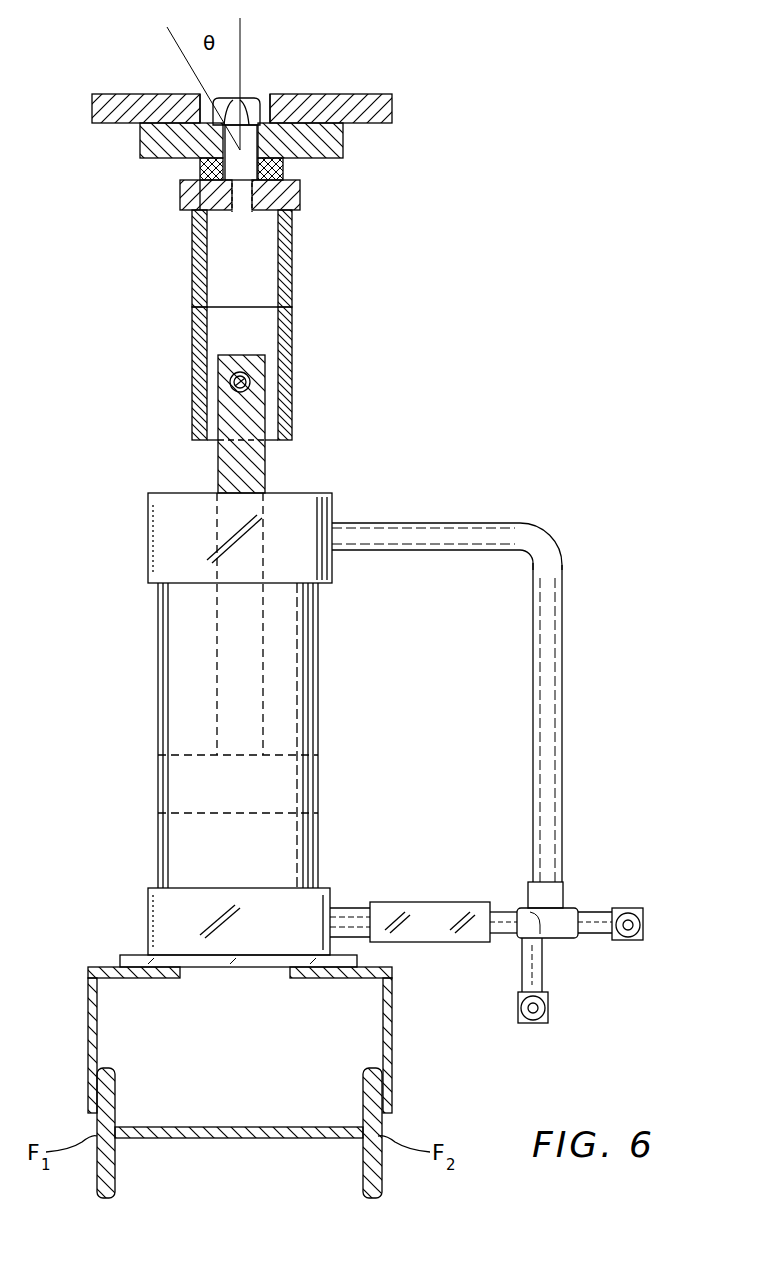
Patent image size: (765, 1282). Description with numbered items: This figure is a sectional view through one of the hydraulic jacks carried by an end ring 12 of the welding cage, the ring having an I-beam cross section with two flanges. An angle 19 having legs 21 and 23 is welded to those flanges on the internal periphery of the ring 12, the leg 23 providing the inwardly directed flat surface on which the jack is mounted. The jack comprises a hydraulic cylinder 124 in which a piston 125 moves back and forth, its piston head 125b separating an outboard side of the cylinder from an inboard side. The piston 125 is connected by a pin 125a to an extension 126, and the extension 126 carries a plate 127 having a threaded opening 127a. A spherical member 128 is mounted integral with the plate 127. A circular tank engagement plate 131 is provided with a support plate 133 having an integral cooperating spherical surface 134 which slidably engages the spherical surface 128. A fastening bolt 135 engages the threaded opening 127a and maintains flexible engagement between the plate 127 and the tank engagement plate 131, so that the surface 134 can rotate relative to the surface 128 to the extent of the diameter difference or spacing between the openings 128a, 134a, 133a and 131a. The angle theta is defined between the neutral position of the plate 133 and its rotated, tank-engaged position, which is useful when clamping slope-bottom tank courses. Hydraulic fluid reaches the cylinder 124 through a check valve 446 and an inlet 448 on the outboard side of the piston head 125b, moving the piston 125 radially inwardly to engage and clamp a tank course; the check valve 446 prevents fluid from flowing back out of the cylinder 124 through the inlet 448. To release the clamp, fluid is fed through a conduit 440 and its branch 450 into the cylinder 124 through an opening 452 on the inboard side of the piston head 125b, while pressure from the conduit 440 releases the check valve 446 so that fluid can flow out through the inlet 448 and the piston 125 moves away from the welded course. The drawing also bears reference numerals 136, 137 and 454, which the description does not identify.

The ring 12 is at (216, 1146).
The angle 19 is at (388, 1003).
The leg 21 is at (92, 1020).
The leg 23 is at (107, 957).
The hydraulic cylinder 124 is at (318, 708).
The piston 125 is at (217, 661).
The pin 125a is at (228, 360).
The piston head 125b is at (185, 758).
The extension 126 is at (193, 317).
The plate 127 is at (300, 195).
The threaded opening 127a is at (282, 203).
The spherical member 128 is at (300, 184).
The opening 128a is at (204, 180).
The circular tank engagement plate 131 is at (107, 103).
The opening 131a is at (205, 100).
The support plate 133 is at (153, 148).
The opening 133a is at (290, 140).
The spherical surface 134 is at (280, 164).
The opening 134a is at (208, 164).
The fastening bolt 135 is at (242, 137).
The bolt head 136 is at (257, 106).
The bolt lower end 137 is at (240, 213).
The conduit 440 is at (596, 910).
The check valve 446 is at (437, 907).
The inlet 448 is at (333, 905).
The branch 450 is at (563, 690).
The opening 452 is at (336, 522).
The tee fitting 454 is at (498, 908).